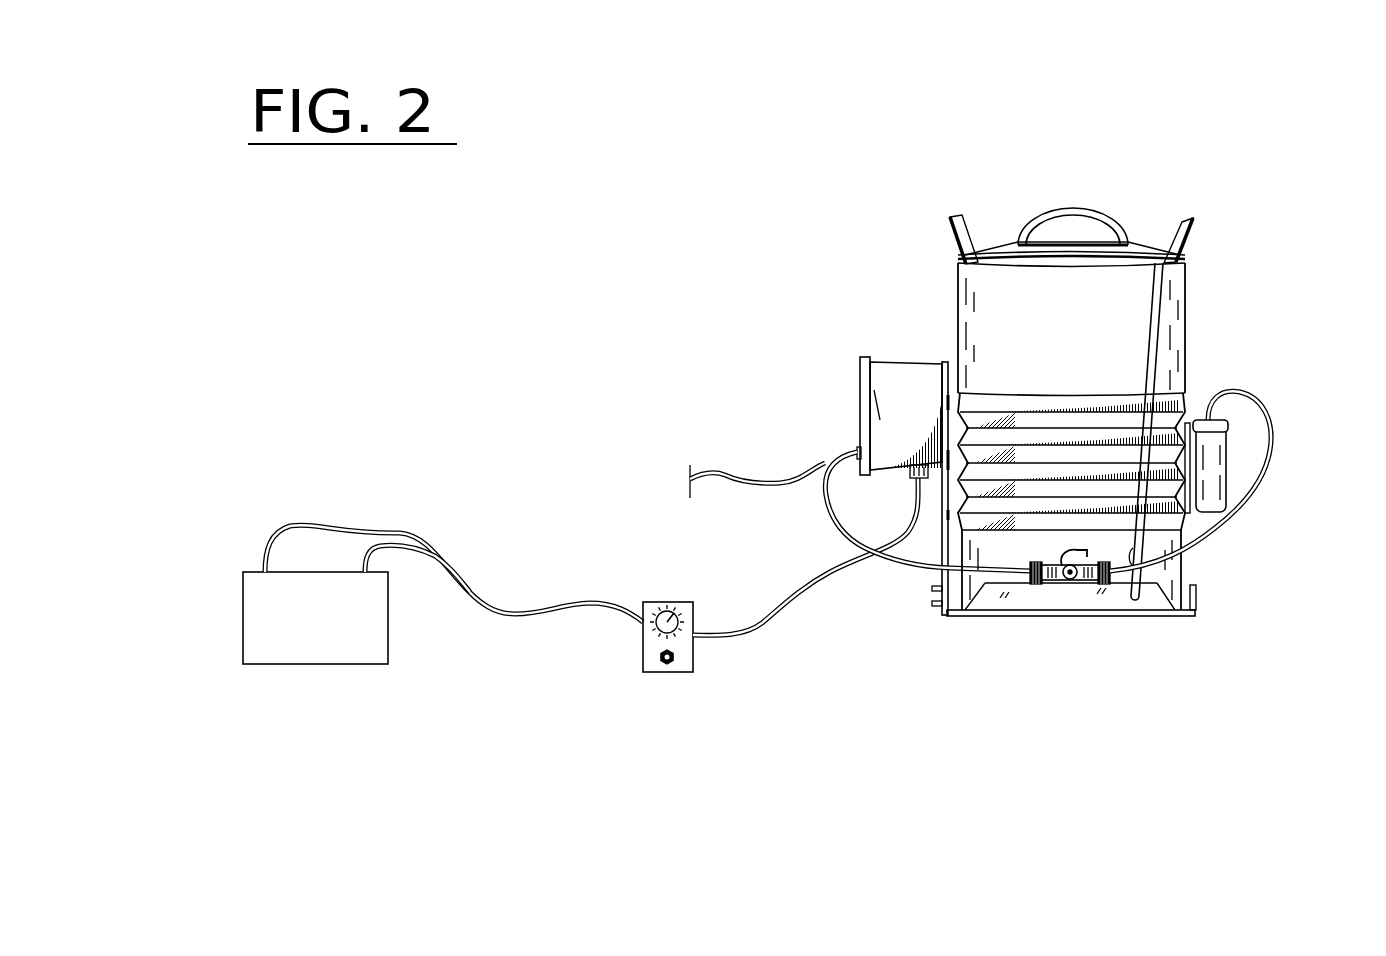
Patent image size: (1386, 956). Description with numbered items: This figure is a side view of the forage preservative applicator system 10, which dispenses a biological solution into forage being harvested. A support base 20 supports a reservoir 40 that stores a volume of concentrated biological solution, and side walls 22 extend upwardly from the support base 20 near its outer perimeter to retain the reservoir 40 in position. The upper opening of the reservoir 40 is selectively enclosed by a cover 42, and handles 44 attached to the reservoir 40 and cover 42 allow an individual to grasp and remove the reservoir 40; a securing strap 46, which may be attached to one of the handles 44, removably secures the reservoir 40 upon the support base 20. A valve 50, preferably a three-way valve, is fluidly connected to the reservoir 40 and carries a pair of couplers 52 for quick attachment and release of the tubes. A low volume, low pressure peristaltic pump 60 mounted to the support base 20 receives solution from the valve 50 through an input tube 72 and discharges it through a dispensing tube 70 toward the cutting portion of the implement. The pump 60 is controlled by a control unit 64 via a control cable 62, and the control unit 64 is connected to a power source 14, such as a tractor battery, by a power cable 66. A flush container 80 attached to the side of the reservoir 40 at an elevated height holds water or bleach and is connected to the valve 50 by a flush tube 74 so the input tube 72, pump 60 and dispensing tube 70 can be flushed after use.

The forage preservative applicator system 10 is at (720, 134).
The power source 14 is at (310, 645).
The support base 20 is at (1196, 612).
The side walls 22 is at (1165, 603).
The reservoir 40 is at (1178, 312).
The cover 42 is at (1153, 245).
The handles 44 is at (972, 223).
The securing strap 46 is at (1152, 378).
The valve 50 is at (1068, 585).
The couplers 52 is at (1050, 582).
The pump 60 is at (905, 393).
The control cable 62 is at (762, 628).
The control unit 64 is at (687, 662).
The power cable 66 is at (512, 618).
The dispensing tube 70 is at (733, 473).
The input tube 72 is at (905, 565).
The flush tube 74 is at (1265, 503).
The flush container 80 is at (1228, 465).